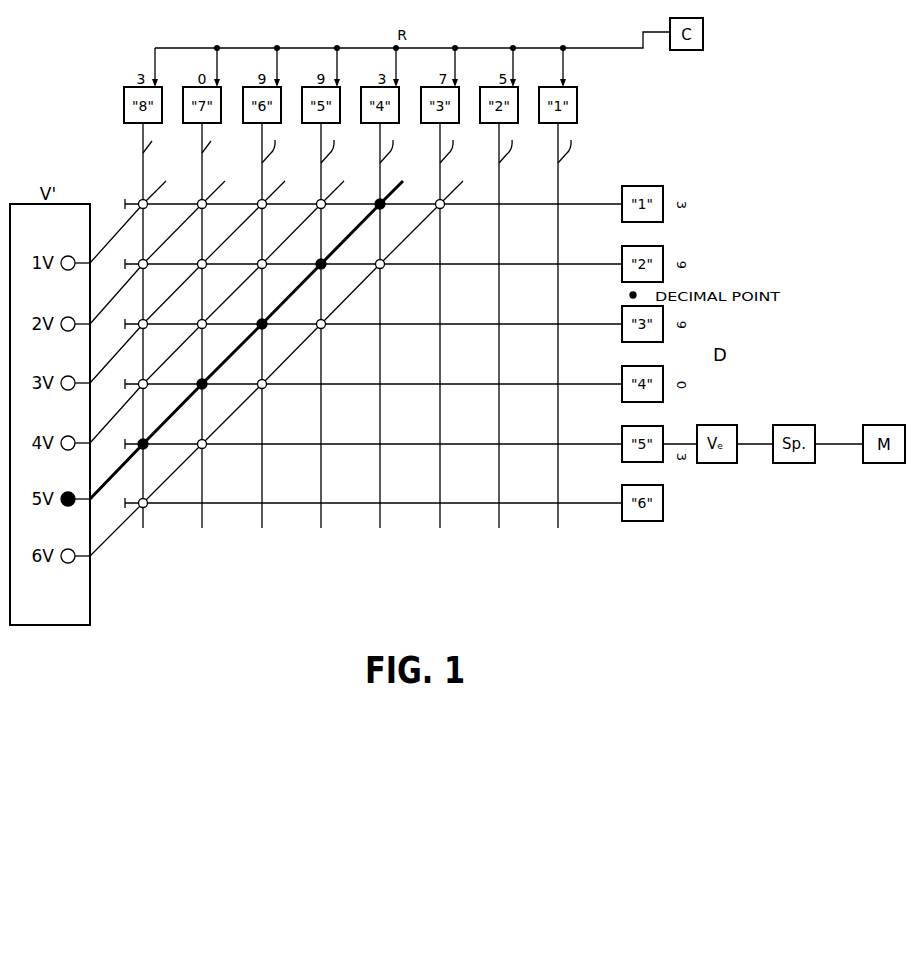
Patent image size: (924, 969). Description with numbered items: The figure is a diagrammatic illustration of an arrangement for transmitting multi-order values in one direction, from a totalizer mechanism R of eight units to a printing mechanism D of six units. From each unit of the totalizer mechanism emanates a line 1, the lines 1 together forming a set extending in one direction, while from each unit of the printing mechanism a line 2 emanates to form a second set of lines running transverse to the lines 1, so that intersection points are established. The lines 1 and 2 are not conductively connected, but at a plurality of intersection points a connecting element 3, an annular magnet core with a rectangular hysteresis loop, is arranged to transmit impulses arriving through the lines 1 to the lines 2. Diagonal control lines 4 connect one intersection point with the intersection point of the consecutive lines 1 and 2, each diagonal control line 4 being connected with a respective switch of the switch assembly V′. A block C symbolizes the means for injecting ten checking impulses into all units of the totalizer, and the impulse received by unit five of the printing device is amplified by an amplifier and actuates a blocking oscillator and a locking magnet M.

The line 1 is at (357, 148).
The line 2 is at (373, 349).
The connecting element 3 is at (205, 207).
The diagonal control line 4 is at (276, 368).